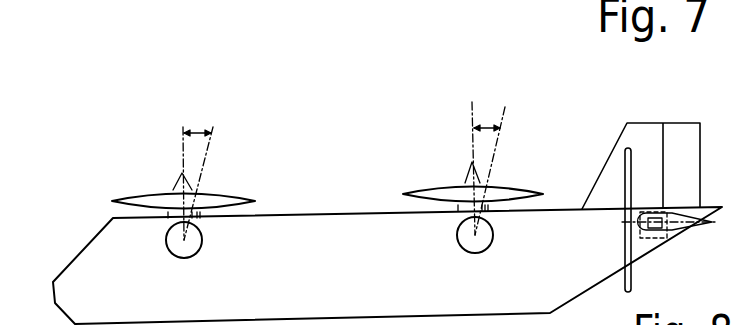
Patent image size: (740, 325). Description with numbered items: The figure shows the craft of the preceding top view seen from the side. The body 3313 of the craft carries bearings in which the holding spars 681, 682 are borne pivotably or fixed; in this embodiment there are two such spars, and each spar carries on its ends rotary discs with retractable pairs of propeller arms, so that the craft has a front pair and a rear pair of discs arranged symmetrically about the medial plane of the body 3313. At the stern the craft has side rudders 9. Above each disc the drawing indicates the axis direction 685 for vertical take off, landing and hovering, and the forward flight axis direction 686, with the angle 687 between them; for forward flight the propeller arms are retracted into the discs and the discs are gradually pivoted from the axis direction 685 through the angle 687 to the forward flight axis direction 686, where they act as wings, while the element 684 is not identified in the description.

The side rudder 9 is at (682, 137).
The holding spar 681 is at (202, 240).
The holding spar 682 is at (488, 238).
The rotor mounting pylon 684 is at (175, 217).
The axis direction 685 is at (181, 137).
The forward flight axis direction 686 is at (210, 147).
The angle 687 is at (192, 134).
The body 3313 is at (387, 265).